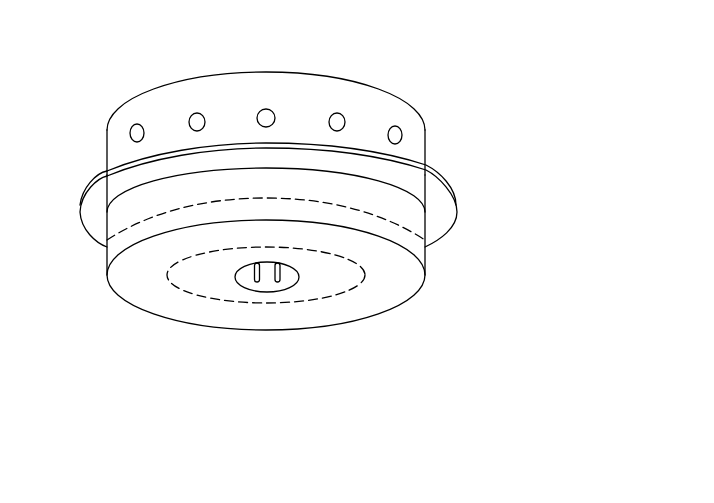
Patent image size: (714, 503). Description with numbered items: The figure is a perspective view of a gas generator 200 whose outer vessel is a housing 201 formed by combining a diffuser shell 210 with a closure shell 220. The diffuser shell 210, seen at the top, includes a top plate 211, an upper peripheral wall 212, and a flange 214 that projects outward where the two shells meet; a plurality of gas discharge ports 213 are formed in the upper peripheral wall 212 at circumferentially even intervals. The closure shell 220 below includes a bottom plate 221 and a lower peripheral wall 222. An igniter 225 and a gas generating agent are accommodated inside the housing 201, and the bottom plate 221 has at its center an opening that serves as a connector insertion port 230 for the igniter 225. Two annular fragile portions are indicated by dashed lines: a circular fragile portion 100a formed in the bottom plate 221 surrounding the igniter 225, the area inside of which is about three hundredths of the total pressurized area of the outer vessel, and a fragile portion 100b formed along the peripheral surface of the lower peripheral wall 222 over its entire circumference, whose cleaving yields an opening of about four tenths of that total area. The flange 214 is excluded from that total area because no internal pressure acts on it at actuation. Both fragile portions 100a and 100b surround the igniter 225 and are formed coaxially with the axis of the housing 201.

The gas generator 200 is at (271, 62).
The housing 201 is at (541, 163).
The diffuser shell 210 is at (415, 156).
The top plate 211 is at (200, 77).
The upper peripheral wall 212 is at (147, 108).
The gas discharge ports 213 is at (339, 113).
The flange 214 is at (96, 200).
The closure shell 220 is at (430, 259).
The bottom plate 221 is at (317, 301).
The lower peripheral wall 222 is at (113, 227).
The igniter 225 is at (262, 277).
The connector insertion port 230 is at (240, 276).
The circular fragile portion 100a is at (354, 290).
The fragile portion 100b is at (158, 214).